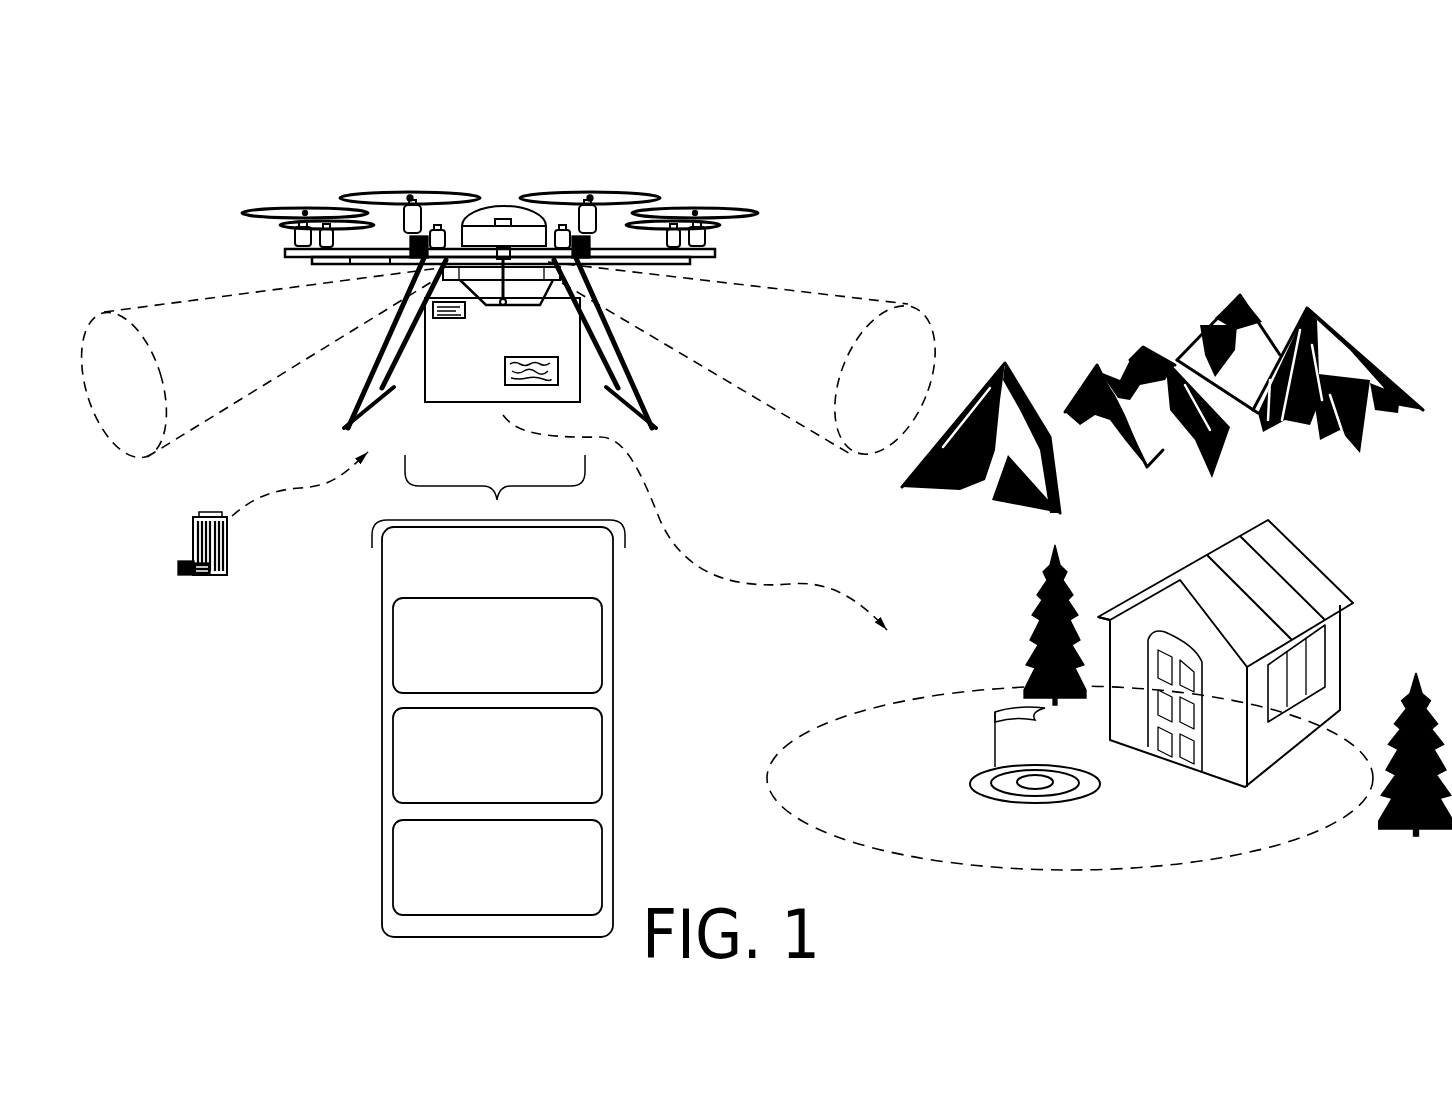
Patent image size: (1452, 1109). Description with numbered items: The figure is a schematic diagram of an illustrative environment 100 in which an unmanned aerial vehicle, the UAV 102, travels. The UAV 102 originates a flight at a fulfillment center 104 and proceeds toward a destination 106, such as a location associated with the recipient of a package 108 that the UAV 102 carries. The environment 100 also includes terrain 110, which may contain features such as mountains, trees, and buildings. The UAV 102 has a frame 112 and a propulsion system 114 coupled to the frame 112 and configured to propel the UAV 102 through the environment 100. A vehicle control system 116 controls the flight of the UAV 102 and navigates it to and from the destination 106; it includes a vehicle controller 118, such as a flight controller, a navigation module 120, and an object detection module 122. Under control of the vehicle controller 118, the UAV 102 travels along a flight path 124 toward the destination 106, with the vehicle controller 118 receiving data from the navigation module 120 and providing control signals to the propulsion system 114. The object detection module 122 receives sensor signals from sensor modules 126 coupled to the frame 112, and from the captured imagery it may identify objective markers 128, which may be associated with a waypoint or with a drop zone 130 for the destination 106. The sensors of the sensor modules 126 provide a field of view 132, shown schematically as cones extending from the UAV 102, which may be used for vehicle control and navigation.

The environment 100 is at (1247, 138).
The unmanned aerial vehicle 102 is at (470, 140).
The fulfillment center 104 is at (202, 574).
The destination 106 is at (902, 733).
The package 108 is at (502, 402).
The terrain 110 is at (1125, 285).
The frame 112 is at (370, 270).
The propulsion system 114 is at (617, 180).
The vehicle control system 116 is at (498, 696).
The vehicle controller 118 is at (497, 645).
The navigation module 120 is at (497, 755).
The object detection module 122 is at (497, 867).
The flight path 124 is at (785, 582).
The sensor modules 126 is at (400, 318).
The objective markers 128 is at (997, 712).
The drop zone 130 is at (1062, 800).
The field of view 132 is at (105, 310).